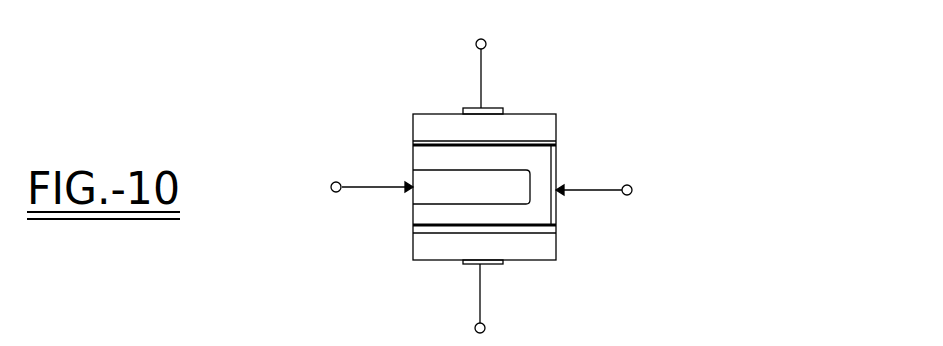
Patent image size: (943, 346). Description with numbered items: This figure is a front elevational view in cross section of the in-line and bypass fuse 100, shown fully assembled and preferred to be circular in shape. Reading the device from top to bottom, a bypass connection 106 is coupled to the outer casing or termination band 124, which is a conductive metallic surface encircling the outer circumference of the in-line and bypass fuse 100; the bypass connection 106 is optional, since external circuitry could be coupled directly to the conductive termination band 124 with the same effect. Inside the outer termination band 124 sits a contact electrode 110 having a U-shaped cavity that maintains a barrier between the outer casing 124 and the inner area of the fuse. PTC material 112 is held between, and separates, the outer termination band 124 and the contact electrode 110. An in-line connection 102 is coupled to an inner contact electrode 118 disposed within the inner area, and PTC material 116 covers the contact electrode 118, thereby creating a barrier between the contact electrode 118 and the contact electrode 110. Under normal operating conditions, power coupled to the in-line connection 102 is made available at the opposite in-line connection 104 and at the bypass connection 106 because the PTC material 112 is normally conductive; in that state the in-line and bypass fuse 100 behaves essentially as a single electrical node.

The in-line and bypass fuse 100 is at (578, 100).
The in-line connection 102 is at (336, 193).
The in-line connection 104 is at (632, 189).
The bypass connection 106 is at (487, 44).
The contact electrode 110 is at (558, 188).
The PTC material 112 is at (557, 123).
The PTC material 116 is at (422, 160).
The contact electrode 118 is at (422, 178).
The outer casing or termination band 124 is at (477, 108).